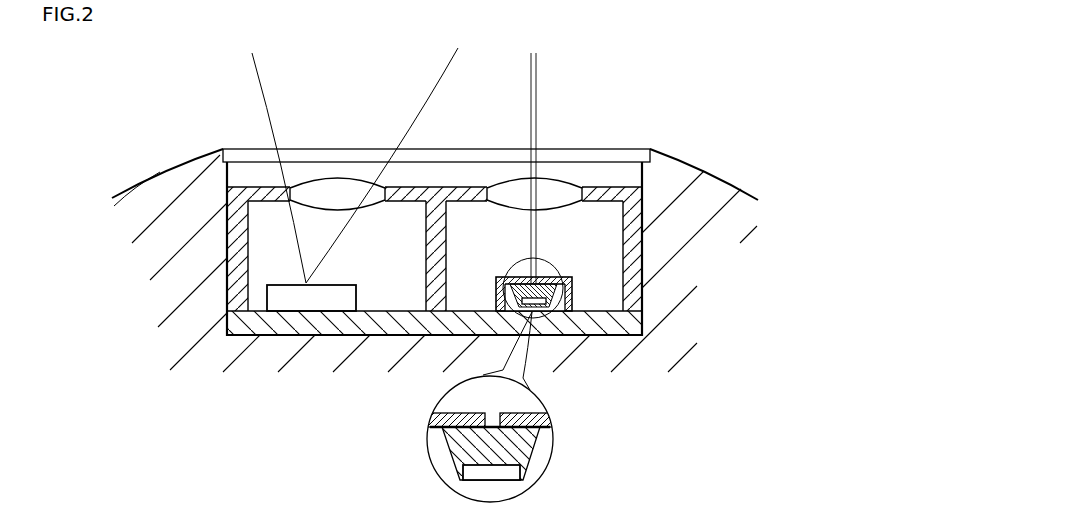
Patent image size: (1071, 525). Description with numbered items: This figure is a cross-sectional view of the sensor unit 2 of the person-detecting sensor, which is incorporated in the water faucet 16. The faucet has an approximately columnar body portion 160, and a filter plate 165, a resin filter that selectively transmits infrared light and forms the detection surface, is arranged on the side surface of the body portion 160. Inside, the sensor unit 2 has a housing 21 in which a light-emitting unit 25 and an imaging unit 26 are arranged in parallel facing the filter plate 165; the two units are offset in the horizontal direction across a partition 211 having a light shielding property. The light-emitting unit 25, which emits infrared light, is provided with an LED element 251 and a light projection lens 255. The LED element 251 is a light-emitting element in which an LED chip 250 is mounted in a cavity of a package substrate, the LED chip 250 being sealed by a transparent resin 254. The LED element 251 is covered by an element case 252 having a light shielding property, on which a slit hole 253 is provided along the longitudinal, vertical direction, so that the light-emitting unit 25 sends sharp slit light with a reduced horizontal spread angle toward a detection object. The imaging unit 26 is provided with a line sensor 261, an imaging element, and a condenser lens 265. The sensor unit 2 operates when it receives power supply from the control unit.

The sensor unit 2 is at (493, 276).
The water faucet 16 is at (168, 147).
The body portion 160 is at (725, 168).
The filter plate 165 is at (627, 149).
The housing 21 is at (497, 215).
The partition 211 is at (446, 241).
The imaging unit 26 is at (330, 165).
The condenser lens 265 is at (338, 187).
The line sensor 261 is at (288, 298).
The light-emitting unit 25 is at (566, 176).
The light projection lens 255 is at (545, 186).
The LED chip 250 is at (475, 473).
The LED element 251 is at (545, 318).
The element case 252 is at (573, 293).
The slit hole 253 is at (492, 412).
The transparent resin 254 is at (527, 448).